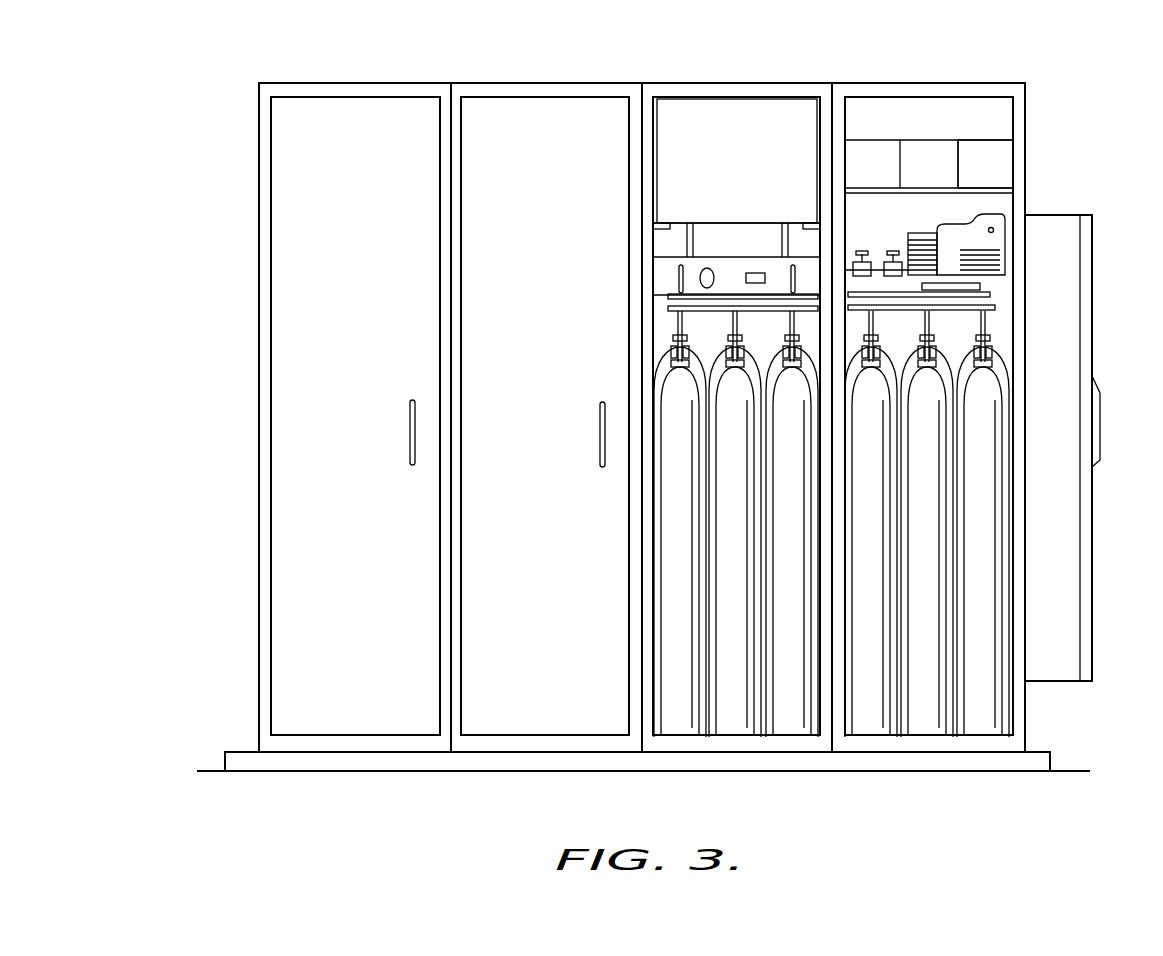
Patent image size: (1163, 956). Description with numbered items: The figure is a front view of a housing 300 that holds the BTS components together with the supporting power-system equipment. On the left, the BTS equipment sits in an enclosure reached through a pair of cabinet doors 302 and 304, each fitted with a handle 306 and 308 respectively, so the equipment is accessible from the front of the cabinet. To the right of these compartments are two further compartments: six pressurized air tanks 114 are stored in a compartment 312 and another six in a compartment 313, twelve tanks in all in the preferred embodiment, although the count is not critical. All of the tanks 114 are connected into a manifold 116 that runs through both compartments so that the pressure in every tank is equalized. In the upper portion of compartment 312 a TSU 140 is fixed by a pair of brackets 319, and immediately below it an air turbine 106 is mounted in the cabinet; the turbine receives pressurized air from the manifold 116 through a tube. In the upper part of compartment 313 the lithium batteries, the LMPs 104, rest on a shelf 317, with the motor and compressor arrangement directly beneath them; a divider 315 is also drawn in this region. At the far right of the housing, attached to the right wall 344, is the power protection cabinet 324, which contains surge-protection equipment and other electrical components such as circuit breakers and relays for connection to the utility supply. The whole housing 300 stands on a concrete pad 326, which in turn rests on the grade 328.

The housing 300 is at (678, 379).
The cabinet door 302 is at (312, 416).
The cabinet door 304 is at (545, 388).
The handle 306 is at (413, 463).
The handle 308 is at (603, 463).
The TSU 140 is at (694, 388).
The brackets 319 is at (817, 172).
The compartment 312 is at (738, 232).
The air turbine 106 is at (660, 275).
The manifold 116 is at (678, 322).
The shelf 317 is at (992, 389).
The compartment divider 315 is at (935, 185).
The compartment 313 is at (907, 215).
The right wall 344 is at (1025, 110).
The LMPs 104 is at (988, 152).
The power protection cabinet 324 is at (1075, 265).
The concrete pad 326 is at (230, 757).
The grade 328 is at (335, 812).
The pressurized air tanks 114 is at (925, 730).